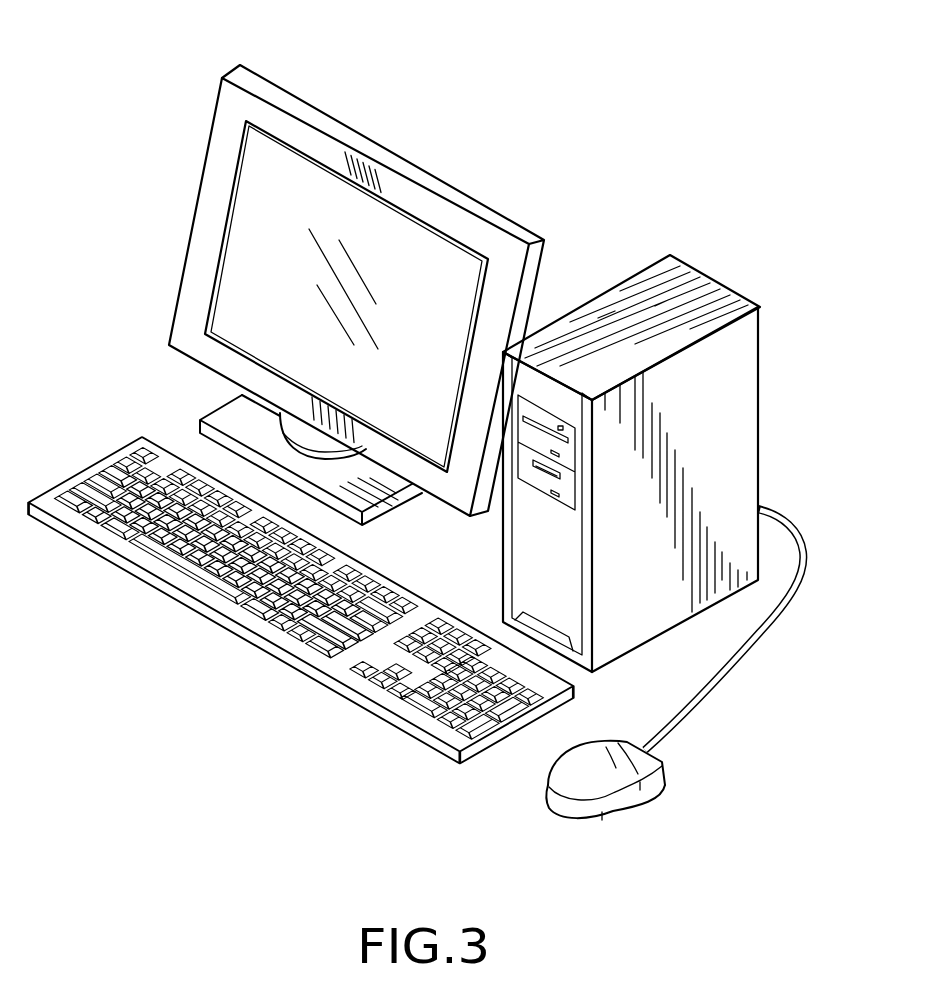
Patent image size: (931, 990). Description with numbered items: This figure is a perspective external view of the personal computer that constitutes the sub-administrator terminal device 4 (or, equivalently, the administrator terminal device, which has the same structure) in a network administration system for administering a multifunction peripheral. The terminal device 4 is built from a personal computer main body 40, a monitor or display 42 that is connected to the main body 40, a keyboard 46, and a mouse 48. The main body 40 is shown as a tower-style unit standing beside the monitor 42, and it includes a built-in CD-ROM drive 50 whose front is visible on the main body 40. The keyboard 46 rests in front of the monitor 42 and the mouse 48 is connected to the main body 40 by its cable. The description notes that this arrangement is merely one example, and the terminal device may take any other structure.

The sub-administrator terminal device 4 is at (147, 109).
The personal computer main body 40 is at (703, 275).
The monitor 42 is at (421, 168).
The keyboard 46 is at (318, 688).
The mouse 48 is at (633, 798).
The CD-ROM drive 50 is at (575, 445).